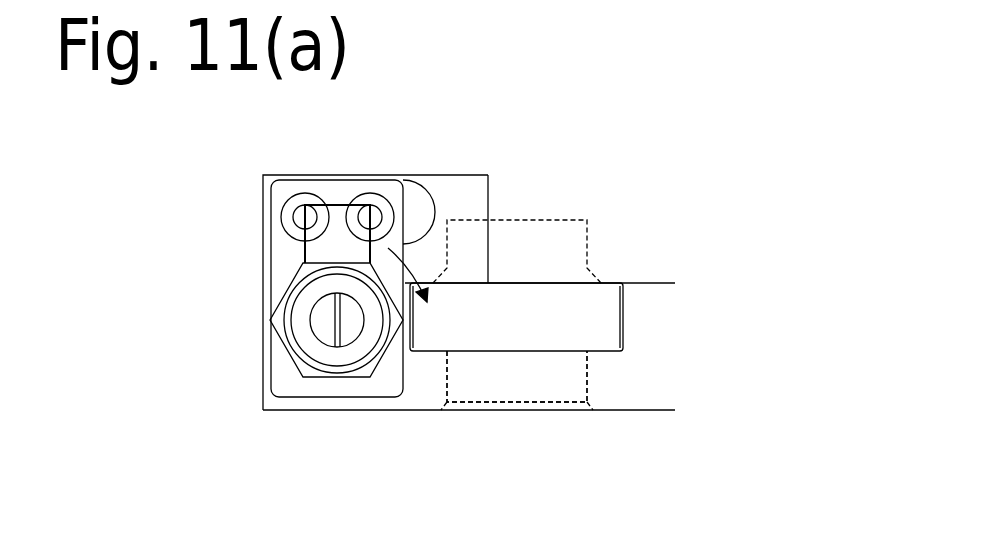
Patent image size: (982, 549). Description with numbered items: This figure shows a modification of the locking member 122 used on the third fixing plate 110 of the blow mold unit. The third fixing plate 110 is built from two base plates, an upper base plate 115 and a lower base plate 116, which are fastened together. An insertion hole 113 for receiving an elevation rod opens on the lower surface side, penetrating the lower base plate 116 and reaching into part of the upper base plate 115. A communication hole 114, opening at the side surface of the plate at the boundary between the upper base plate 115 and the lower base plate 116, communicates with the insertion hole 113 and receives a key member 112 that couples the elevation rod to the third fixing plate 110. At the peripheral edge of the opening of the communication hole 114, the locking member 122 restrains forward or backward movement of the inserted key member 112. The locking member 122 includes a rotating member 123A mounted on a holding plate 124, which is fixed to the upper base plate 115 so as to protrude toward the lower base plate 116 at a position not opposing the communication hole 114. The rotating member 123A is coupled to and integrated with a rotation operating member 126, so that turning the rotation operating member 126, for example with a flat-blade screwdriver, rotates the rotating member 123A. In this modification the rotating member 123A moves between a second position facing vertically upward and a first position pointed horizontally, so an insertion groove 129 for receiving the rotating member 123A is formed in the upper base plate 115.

The third fixing plate 110 is at (617, 297).
The key member 112 is at (485, 340).
The insertion hole 113 is at (557, 225).
The communication hole 114 is at (517, 376).
The upper base plate 115 is at (652, 243).
The lower base plate 116 is at (582, 317).
The locking member 122 is at (277, 425).
The rotating member 123A is at (333, 203).
The holding plate 124 is at (290, 272).
The rotation operating member 126 is at (333, 318).
The insertion groove 129 is at (455, 195).